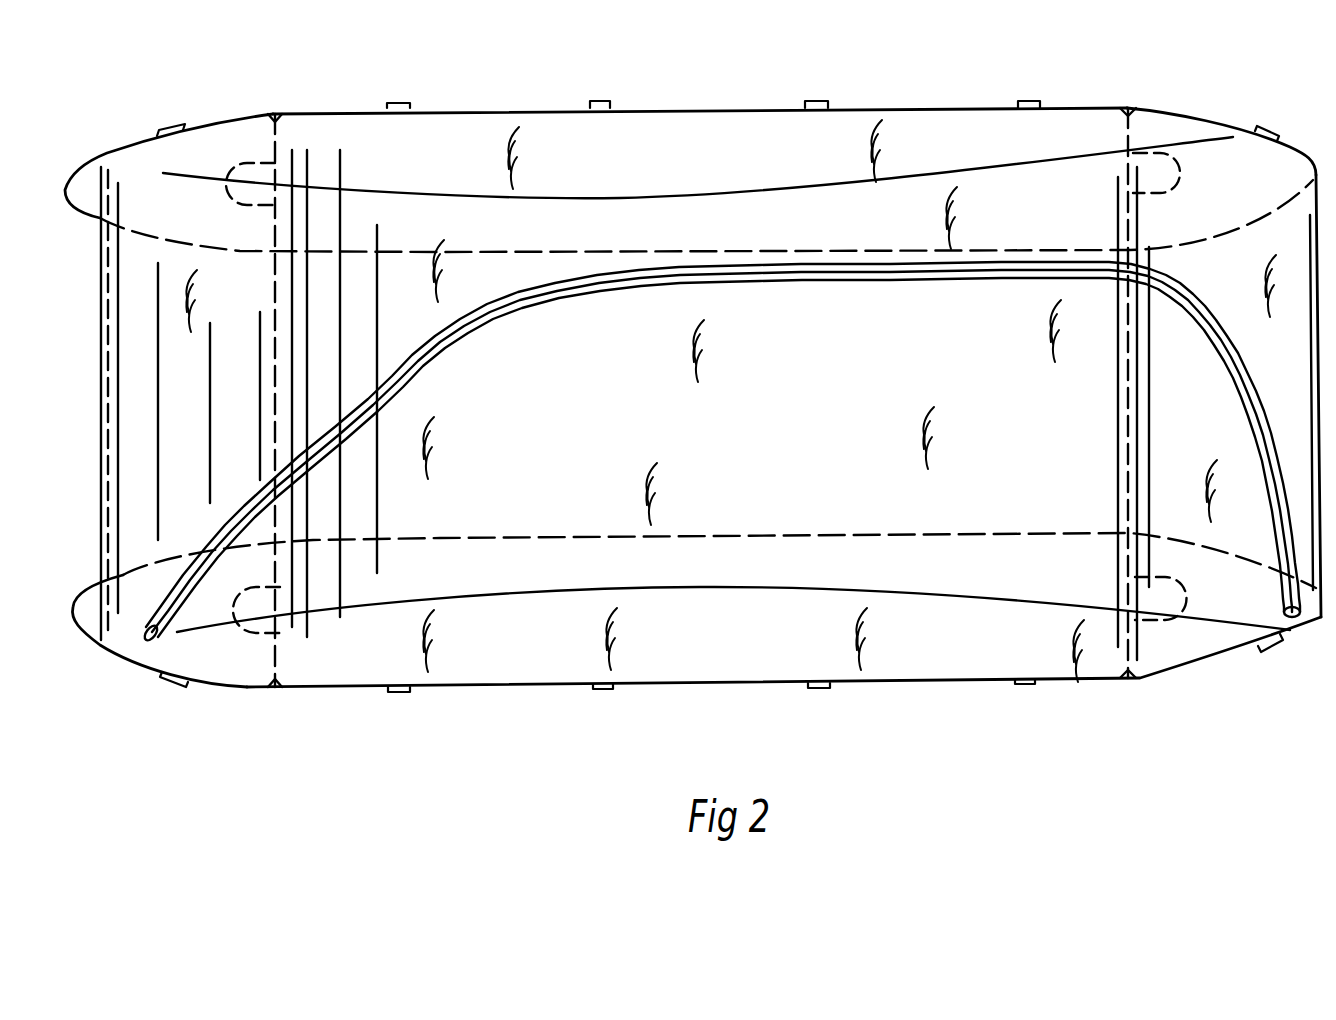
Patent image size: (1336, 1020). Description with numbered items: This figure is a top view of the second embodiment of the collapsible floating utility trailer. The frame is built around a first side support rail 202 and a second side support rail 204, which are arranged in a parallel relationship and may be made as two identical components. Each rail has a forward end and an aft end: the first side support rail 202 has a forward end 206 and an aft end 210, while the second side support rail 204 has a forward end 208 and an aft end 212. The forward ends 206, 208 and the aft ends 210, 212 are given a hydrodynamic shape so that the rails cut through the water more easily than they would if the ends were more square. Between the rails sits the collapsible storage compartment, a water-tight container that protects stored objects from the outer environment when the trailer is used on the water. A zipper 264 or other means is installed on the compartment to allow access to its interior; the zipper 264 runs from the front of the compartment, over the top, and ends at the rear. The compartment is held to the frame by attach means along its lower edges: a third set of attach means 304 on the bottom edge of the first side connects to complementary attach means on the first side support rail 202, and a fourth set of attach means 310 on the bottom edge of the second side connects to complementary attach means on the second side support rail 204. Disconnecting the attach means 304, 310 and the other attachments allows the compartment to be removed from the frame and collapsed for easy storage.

The first side support rail 202 is at (513, 688).
The second side support rail 204 is at (490, 110).
The forward end of first side support rail 206 is at (82, 636).
The forward end of second side support rail 208 is at (78, 168).
The aft end of first side support rail 210 is at (1327, 620).
The aft end of second side support rail 212 is at (1304, 155).
The zipper 264 is at (1290, 622).
The third set of attach means 304 is at (393, 693).
The fourth set of attach means 310 is at (183, 124).